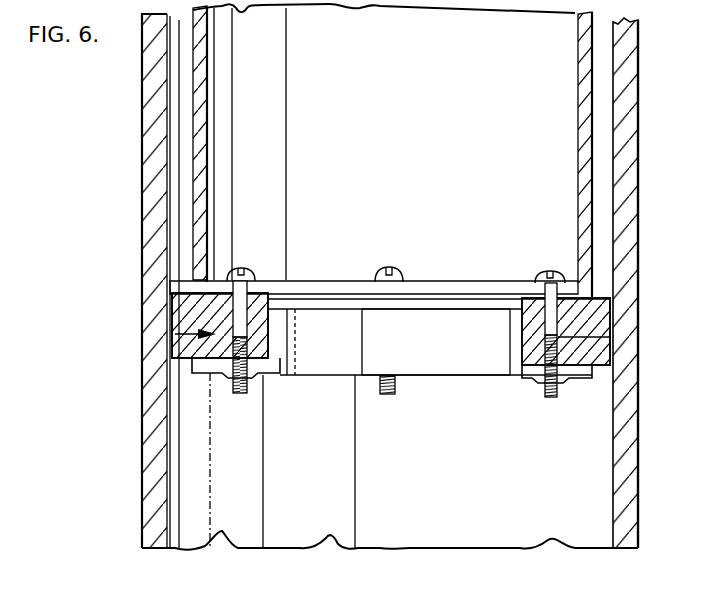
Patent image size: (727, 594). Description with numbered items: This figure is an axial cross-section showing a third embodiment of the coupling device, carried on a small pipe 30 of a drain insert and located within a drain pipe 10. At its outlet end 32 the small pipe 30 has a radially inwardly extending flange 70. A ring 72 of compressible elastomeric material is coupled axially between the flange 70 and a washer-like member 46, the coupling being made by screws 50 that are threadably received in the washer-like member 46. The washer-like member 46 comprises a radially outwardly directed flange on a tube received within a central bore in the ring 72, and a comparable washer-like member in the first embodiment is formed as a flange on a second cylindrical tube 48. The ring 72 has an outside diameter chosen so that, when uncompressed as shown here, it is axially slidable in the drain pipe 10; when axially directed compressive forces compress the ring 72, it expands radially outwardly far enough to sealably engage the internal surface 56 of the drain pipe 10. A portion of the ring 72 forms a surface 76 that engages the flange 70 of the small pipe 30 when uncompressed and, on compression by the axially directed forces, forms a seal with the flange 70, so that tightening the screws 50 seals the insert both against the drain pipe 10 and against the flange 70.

The drain pipe 10 is at (615, 152).
The small pipe 30 is at (584, 171).
The internal surface 56 is at (609, 50).
The outlet end 32 is at (200, 281).
The second cylindrical tube 48 is at (288, 375).
The ring 72 is at (172, 336).
The washer-like member 46 is at (213, 363).
The screws 50 is at (596, 338).
The surface 76 is at (580, 298).
The flange 70 is at (210, 280).